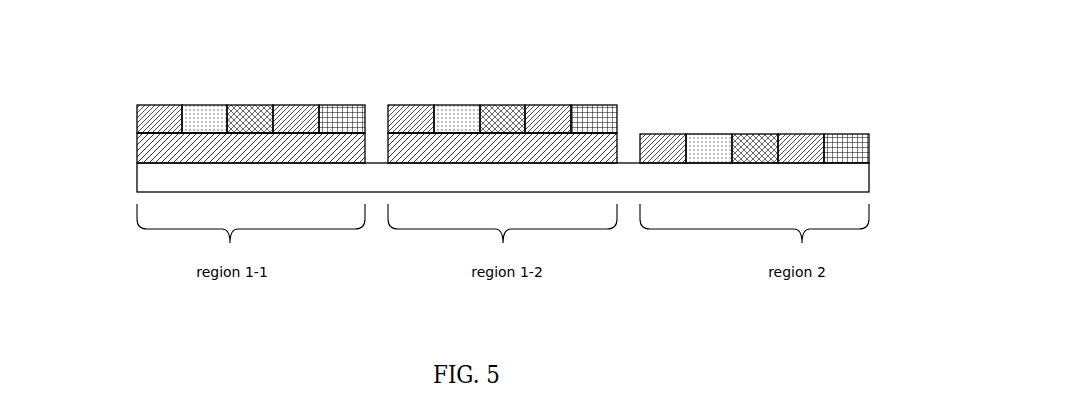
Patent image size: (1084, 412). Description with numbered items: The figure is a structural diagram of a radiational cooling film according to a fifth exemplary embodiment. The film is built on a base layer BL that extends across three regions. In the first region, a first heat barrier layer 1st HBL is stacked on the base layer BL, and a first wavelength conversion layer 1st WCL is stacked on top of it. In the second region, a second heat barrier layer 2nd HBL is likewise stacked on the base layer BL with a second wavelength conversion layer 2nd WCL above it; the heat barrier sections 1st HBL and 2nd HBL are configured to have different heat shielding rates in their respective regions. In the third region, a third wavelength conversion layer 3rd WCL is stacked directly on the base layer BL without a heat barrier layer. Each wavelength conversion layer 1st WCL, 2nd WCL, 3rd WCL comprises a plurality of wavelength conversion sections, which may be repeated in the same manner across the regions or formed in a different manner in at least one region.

The base layer BL is at (870, 185).
The heat barrier layer 1st HBL is at (135, 153).
The heat barrier layer 2nd HBL is at (388, 145).
The wavelength conversion layer 1st WCL is at (135, 123).
The wavelength conversion layer 2nd WCL is at (617, 105).
The wavelength conversion layer 3rd WCL is at (870, 150).